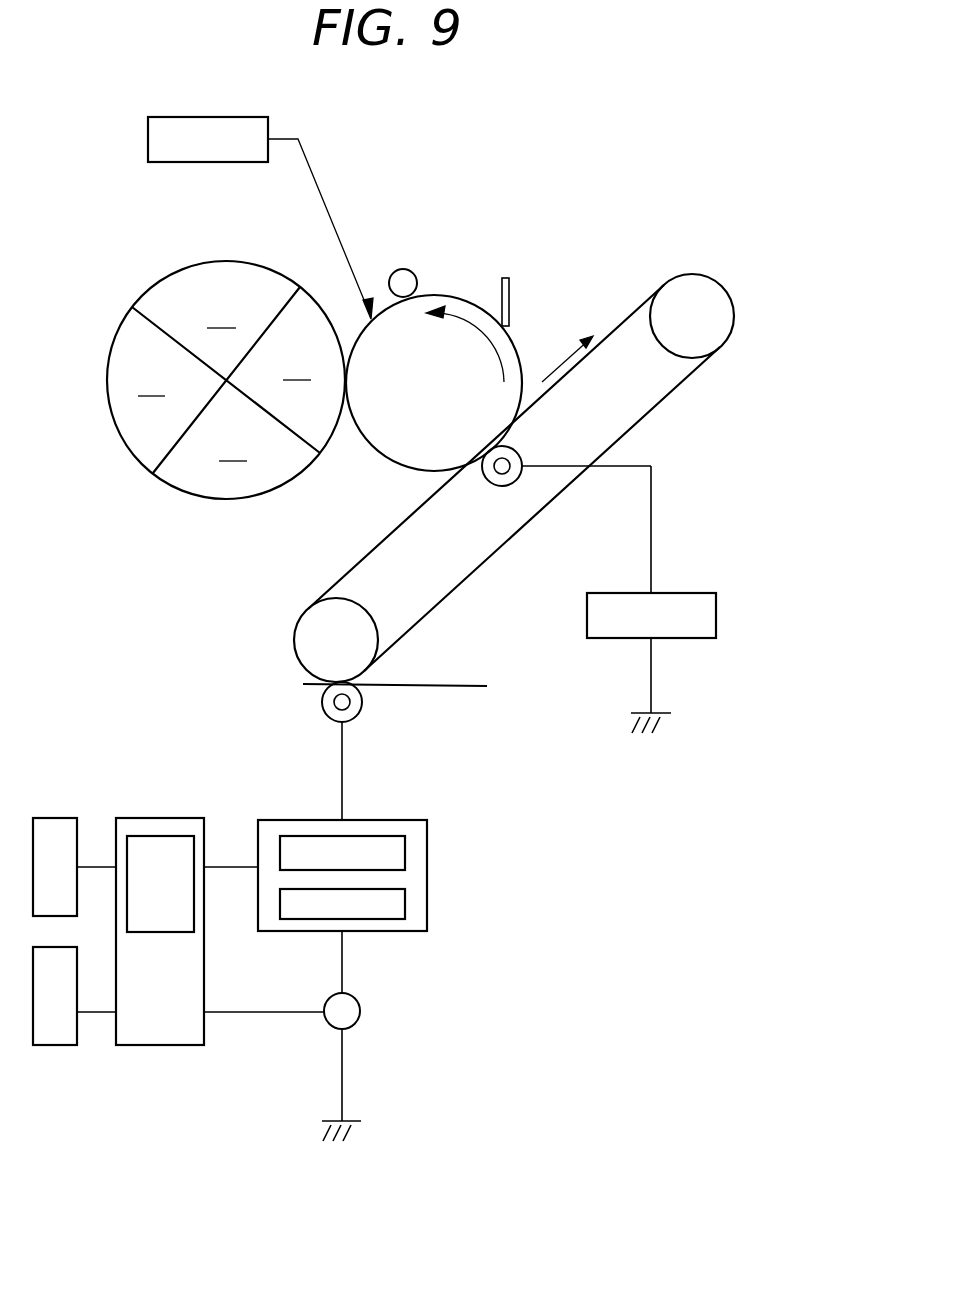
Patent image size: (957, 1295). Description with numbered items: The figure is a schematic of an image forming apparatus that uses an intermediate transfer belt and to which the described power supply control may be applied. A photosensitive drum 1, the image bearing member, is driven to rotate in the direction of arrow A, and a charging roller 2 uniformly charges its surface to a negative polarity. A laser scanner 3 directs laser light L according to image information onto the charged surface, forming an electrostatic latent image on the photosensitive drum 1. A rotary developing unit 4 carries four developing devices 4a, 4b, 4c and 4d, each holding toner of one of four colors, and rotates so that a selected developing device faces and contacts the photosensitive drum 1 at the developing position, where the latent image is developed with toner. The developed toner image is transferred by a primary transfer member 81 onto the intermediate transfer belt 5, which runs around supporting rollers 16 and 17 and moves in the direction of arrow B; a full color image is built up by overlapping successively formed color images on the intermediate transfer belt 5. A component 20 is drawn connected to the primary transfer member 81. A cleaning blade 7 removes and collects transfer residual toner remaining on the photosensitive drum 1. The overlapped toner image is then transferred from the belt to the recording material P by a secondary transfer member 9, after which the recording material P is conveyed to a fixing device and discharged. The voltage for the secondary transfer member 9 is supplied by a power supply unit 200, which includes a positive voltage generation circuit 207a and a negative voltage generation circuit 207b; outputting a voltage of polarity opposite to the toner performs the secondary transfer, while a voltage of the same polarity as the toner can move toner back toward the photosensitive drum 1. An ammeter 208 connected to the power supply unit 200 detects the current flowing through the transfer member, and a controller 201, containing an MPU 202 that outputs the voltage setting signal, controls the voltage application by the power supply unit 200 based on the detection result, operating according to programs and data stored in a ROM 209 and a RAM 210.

The photosensitive drum 1 is at (383, 458).
The charging roller 2 is at (404, 269).
The laser scanner 3 is at (214, 117).
The laser light L is at (320, 190).
The developing unit 4 is at (225, 380).
The developing device 4a is at (298, 368).
The developing device 4b is at (234, 449).
The developing device 4c is at (152, 384).
The developing device 4d is at (222, 316).
The intermediate transfer belt 5 is at (640, 420).
The cleaning blade 7 is at (510, 290).
The primary transfer member 81 is at (492, 482).
The secondary transfer inner roller 16 is at (370, 612).
The tension roller 17 is at (724, 285).
The primary transfer power supply 20 is at (718, 614).
The secondary transfer member 9 is at (354, 720).
The recording material P is at (460, 688).
The drum rotation direction A is at (465, 344).
The belt moving direction B is at (567, 359).
The power supply unit 200 is at (428, 872).
The positive voltage generation circuit 207a is at (405, 848).
The negative voltage generation circuit 207b is at (405, 905).
The ammeter 208 is at (361, 1011).
The controller 201 is at (155, 818).
The MPU 202 is at (172, 836).
The ROM 209 is at (57, 818).
The RAM 210 is at (52, 1047).